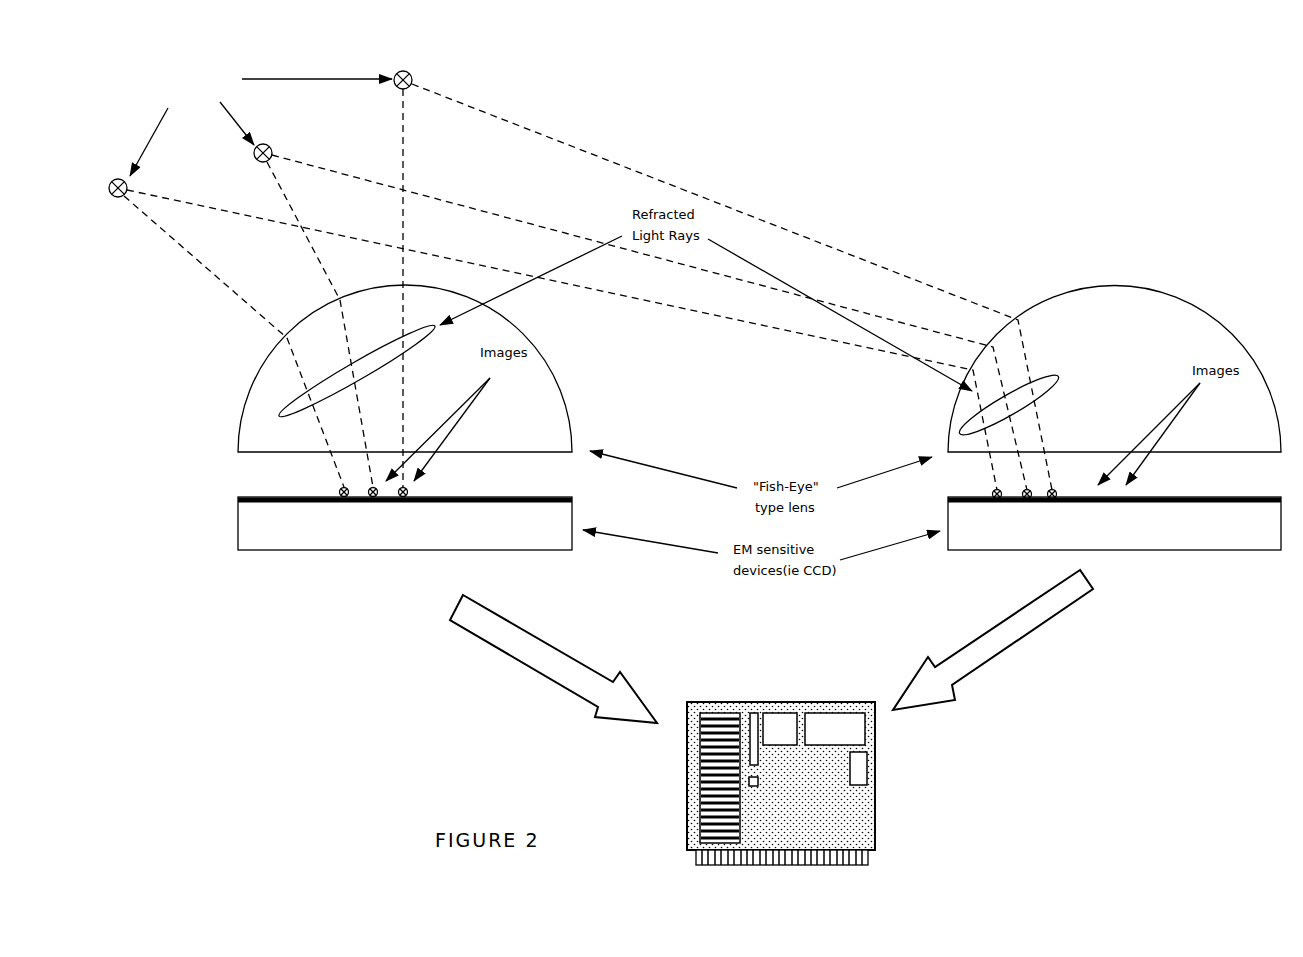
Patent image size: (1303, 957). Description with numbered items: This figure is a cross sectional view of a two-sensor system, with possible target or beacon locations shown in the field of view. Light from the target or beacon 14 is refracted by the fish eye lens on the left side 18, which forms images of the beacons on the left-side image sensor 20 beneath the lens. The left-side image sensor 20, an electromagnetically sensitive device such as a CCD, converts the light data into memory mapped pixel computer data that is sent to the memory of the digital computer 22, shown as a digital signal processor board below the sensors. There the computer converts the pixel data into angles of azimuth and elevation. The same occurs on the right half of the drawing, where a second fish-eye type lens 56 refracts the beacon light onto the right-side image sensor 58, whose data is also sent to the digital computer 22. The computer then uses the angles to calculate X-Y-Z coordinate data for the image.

The target or beacon 14 is at (260, 108).
The fish eye lens on the left side 18 is at (268, 397).
The left-side image sensor 20 is at (284, 530).
The right fish-eye type lens 56 is at (1188, 325).
The right-side image sensor 58 is at (1220, 530).
The digital computer 22 is at (840, 800).